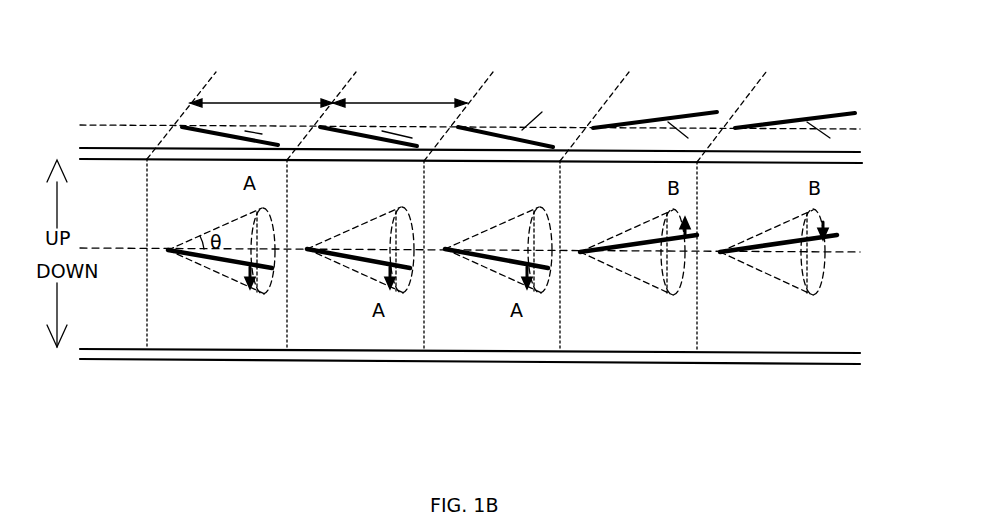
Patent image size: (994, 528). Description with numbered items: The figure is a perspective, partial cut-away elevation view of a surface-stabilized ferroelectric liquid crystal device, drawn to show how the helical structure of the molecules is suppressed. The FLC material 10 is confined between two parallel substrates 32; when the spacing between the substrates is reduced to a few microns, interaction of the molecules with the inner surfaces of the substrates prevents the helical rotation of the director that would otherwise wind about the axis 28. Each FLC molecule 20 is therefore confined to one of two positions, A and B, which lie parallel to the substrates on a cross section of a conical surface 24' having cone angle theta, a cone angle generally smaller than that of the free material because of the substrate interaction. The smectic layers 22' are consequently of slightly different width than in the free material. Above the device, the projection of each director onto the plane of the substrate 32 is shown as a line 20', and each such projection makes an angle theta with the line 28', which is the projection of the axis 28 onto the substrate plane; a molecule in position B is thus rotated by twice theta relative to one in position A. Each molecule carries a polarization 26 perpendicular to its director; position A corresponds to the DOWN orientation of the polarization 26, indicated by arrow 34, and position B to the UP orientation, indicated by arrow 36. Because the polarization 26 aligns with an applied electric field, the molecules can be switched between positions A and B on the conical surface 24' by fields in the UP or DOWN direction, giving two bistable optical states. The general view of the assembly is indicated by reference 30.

The FLC material 10 is at (813, 320).
The FLC molecule 20 is at (502, 256).
The projection line of the director 20' is at (506, 103).
The smectic layer 22' is at (328, 79).
The conical surface 24' is at (496, 251).
The polarization 26 is at (252, 283).
The axis 28 is at (470, 277).
The projection line of the axis 28' is at (470, 101).
The air flow duct 30 is at (163, 68).
The substrate 32 is at (860, 152).
The DOWN arrow 34 is at (58, 305).
The UP arrow 36 is at (58, 203).